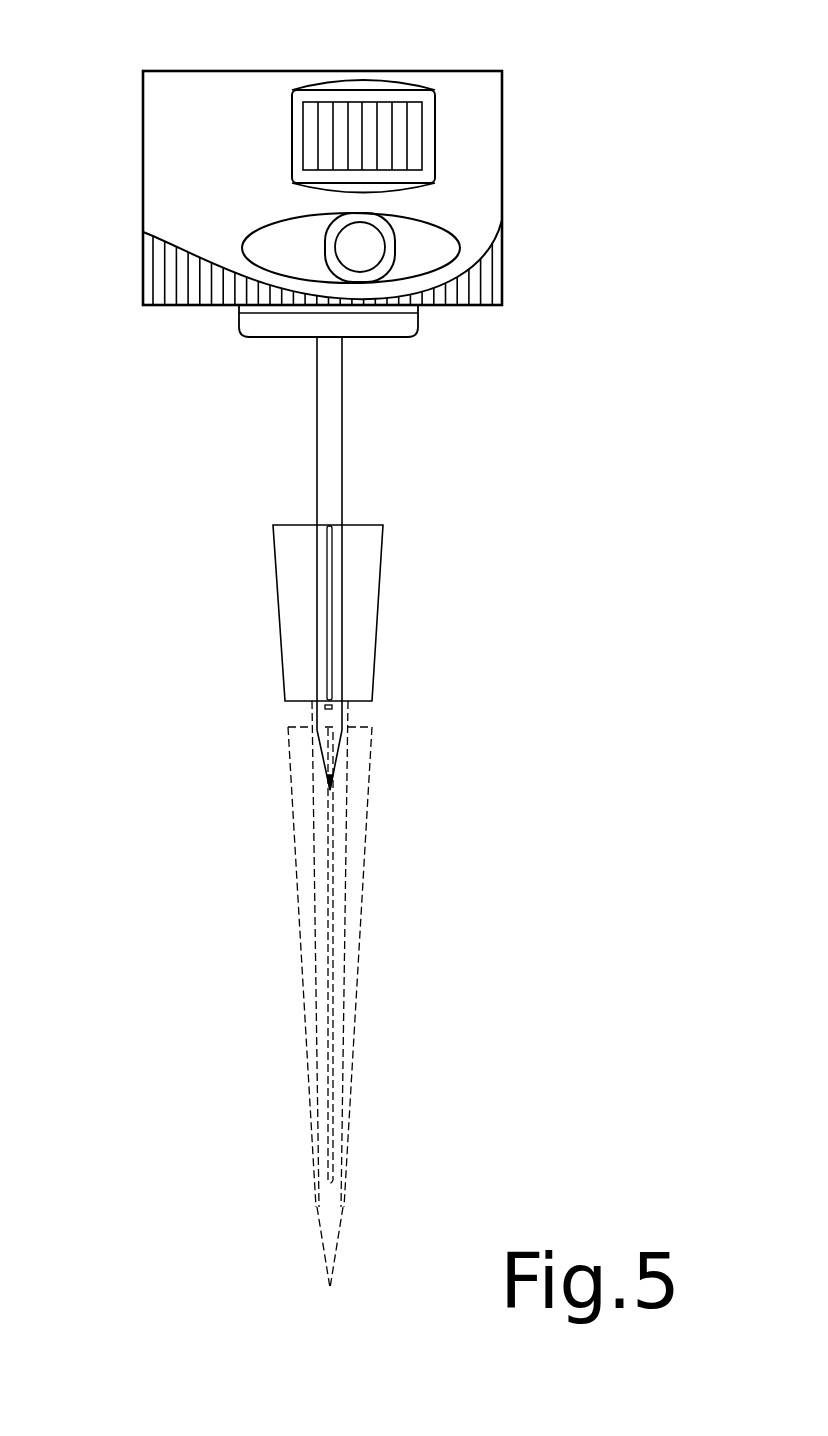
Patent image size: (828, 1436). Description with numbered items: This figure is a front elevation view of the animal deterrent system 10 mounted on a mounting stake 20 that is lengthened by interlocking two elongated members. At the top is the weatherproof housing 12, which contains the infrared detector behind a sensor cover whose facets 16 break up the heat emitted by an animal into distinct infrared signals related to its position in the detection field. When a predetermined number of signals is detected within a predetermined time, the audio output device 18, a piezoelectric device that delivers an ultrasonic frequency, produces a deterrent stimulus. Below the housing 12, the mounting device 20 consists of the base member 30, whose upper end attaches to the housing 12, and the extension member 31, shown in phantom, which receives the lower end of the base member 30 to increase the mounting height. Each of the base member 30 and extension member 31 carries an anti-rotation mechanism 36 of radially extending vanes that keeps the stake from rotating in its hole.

The animal deterrent system 10 is at (410, 225).
The housing 12 is at (473, 152).
The facets 16 is at (382, 115).
The audio output device 18 is at (362, 255).
The mounting device 20 is at (301, 812).
The base member 30 is at (327, 404).
The extension member 31 is at (335, 1216).
The anti-rotation mechanism 36 is at (367, 596).